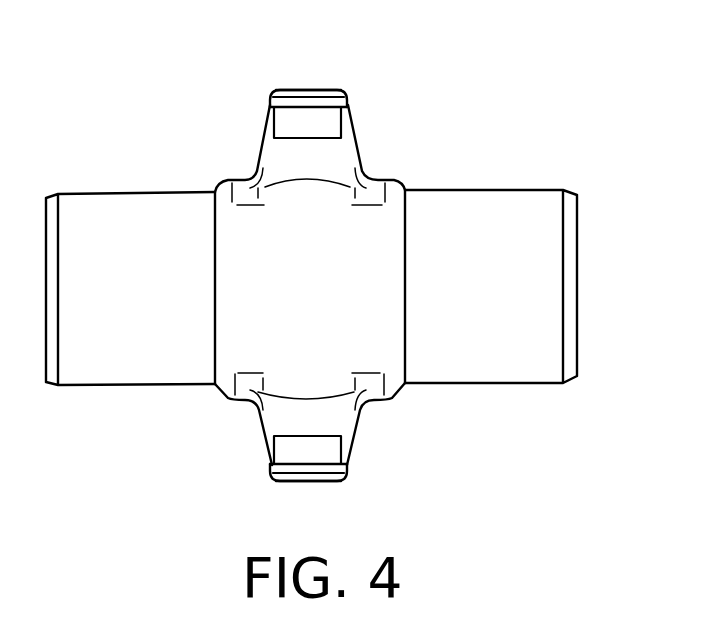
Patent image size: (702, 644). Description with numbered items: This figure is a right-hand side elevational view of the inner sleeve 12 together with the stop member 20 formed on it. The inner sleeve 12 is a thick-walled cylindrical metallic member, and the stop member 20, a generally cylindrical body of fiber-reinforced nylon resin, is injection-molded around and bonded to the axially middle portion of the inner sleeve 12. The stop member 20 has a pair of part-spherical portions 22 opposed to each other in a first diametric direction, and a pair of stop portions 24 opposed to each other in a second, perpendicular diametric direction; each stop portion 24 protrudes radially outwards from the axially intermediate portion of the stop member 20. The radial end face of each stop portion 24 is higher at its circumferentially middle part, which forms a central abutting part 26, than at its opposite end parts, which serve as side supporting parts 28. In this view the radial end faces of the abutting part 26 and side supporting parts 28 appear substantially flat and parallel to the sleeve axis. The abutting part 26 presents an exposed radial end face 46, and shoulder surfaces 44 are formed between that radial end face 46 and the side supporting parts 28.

The inner sleeve 12 is at (522, 205).
The stop member 20 is at (311, 286).
The part-spherical portion 22 is at (383, 312).
The stop portion 24 is at (243, 286).
The central abutting part 26 is at (268, 286).
The side supporting part 28 is at (252, 133).
The shoulder surface 44 is at (315, 102).
The radial end face 46 is at (292, 88).